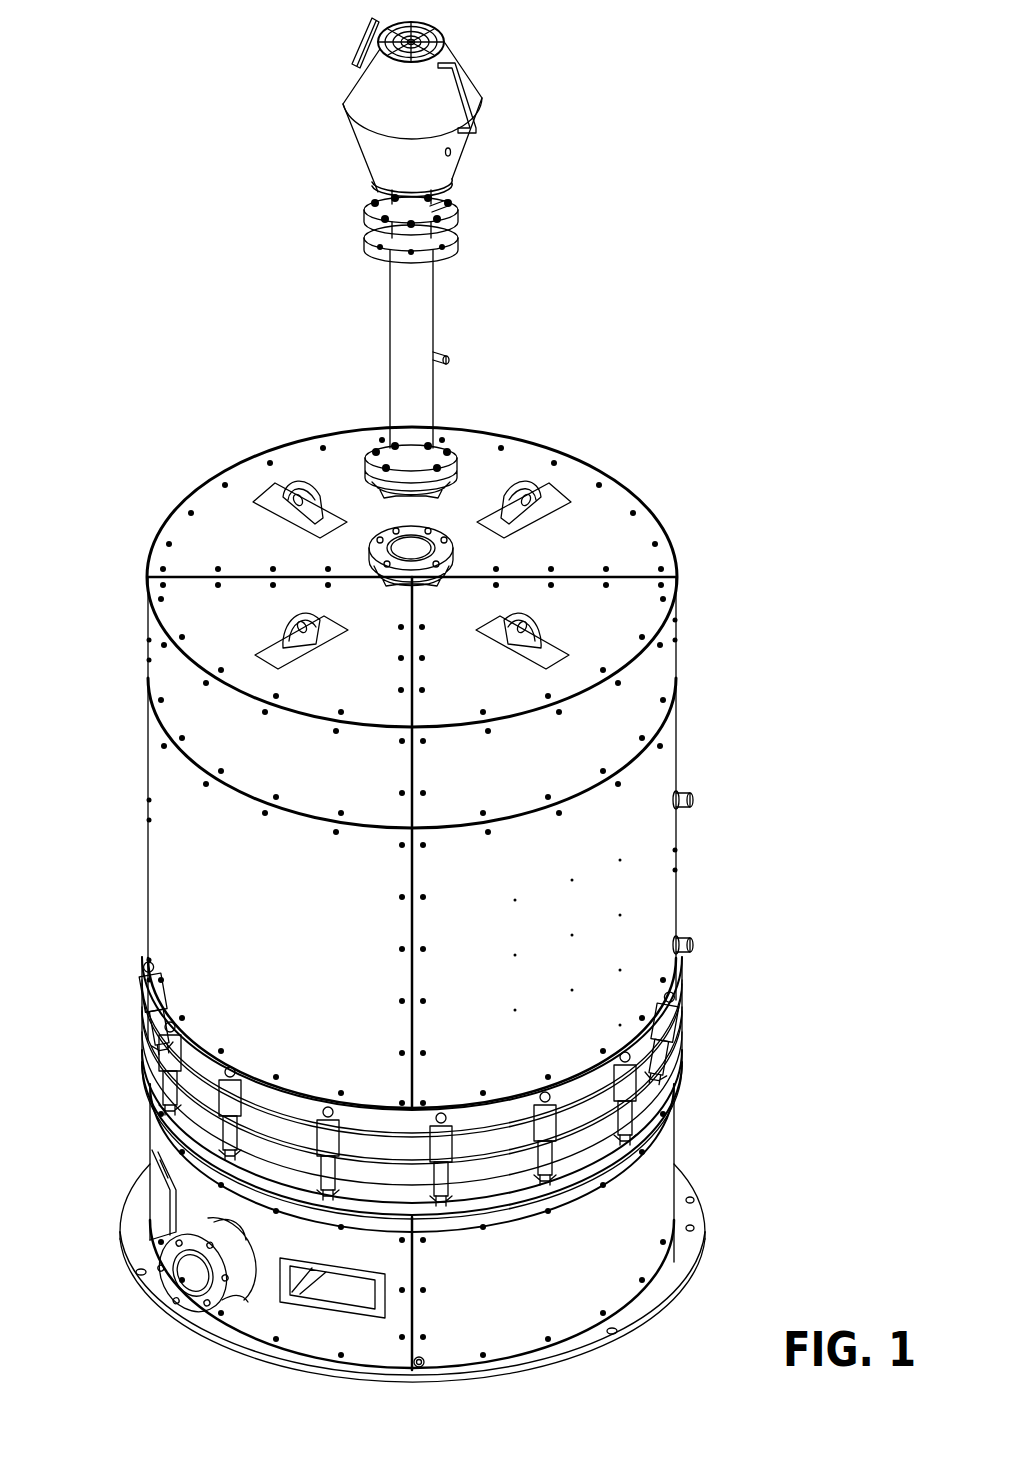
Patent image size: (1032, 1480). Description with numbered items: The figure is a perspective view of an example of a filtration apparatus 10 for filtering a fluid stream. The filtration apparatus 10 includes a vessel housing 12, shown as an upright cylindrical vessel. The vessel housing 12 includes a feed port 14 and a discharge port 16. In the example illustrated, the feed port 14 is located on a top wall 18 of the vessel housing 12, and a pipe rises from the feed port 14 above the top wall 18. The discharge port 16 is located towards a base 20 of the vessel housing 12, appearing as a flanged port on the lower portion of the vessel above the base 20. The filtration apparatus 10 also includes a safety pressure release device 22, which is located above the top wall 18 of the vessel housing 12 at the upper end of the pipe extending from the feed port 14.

The filtration apparatus 10 is at (96, 149).
The vessel housing 12 is at (176, 878).
The feed port 14 is at (385, 535).
The discharge port 16 is at (180, 1290).
The top wall 18 is at (230, 505).
The base 20 is at (135, 1192).
The safety pressure release device 22 is at (355, 88).